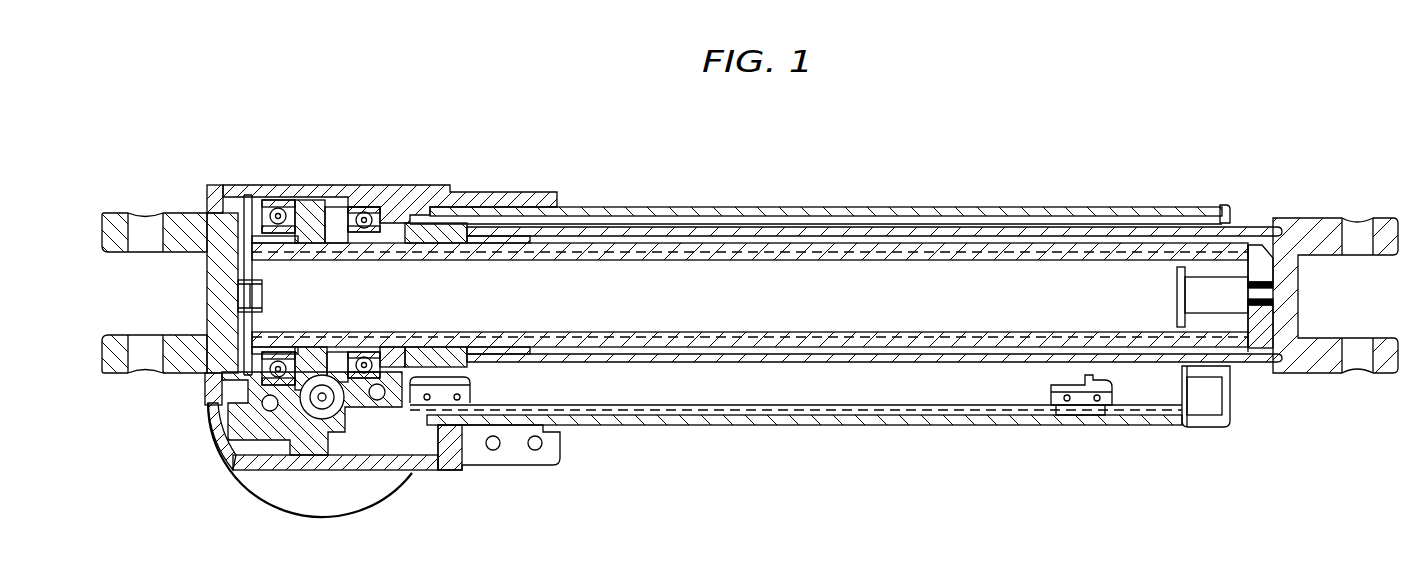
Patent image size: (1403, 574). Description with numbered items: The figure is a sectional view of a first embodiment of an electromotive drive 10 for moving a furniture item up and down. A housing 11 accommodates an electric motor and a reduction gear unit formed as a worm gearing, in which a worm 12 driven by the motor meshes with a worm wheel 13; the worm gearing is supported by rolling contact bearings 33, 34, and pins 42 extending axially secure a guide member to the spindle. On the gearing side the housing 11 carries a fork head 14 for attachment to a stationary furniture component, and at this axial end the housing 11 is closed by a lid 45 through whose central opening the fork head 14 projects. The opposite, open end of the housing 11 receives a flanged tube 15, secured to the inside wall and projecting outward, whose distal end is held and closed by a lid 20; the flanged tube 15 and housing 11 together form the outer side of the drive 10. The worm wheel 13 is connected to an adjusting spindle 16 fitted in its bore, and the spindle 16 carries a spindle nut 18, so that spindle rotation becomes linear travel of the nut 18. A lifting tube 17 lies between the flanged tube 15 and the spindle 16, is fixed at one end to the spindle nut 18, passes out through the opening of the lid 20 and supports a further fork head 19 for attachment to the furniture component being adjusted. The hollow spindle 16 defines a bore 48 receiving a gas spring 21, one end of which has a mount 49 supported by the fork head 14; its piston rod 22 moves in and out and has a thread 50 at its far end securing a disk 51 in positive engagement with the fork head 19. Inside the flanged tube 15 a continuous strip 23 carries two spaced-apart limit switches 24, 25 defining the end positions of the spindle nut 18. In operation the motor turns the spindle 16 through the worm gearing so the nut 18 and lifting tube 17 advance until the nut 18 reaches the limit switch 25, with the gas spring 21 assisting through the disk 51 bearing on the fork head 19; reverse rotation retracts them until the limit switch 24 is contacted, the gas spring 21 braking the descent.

The electromotive drive 10 is at (796, 154).
The housing 11 is at (383, 193).
The worm 12 is at (324, 400).
The worm wheel 13 is at (330, 343).
The fork head 14 is at (182, 222).
The flanged tube 15 is at (609, 206).
The adjusting spindle 16 is at (930, 247).
The lifting tube 17 is at (1012, 229).
The spindle nut 18 is at (420, 228).
The fork head 19 is at (1306, 220).
The lid 20 is at (1232, 422).
The gas spring 21 is at (790, 318).
The piston rod 22 is at (1213, 302).
The continuous strip 23 is at (983, 412).
The limit switch 24 is at (468, 385).
The limit switch 25 is at (1080, 387).
The rolling contact bearing 33 is at (214, 438).
The rolling contact bearing 34 is at (357, 207).
The pins 42 is at (270, 230).
The lid 45 is at (232, 185).
The bore 48 is at (1188, 265).
The mount 49 is at (236, 320).
The thread 50 is at (1262, 275).
The disk 51 is at (1263, 332).